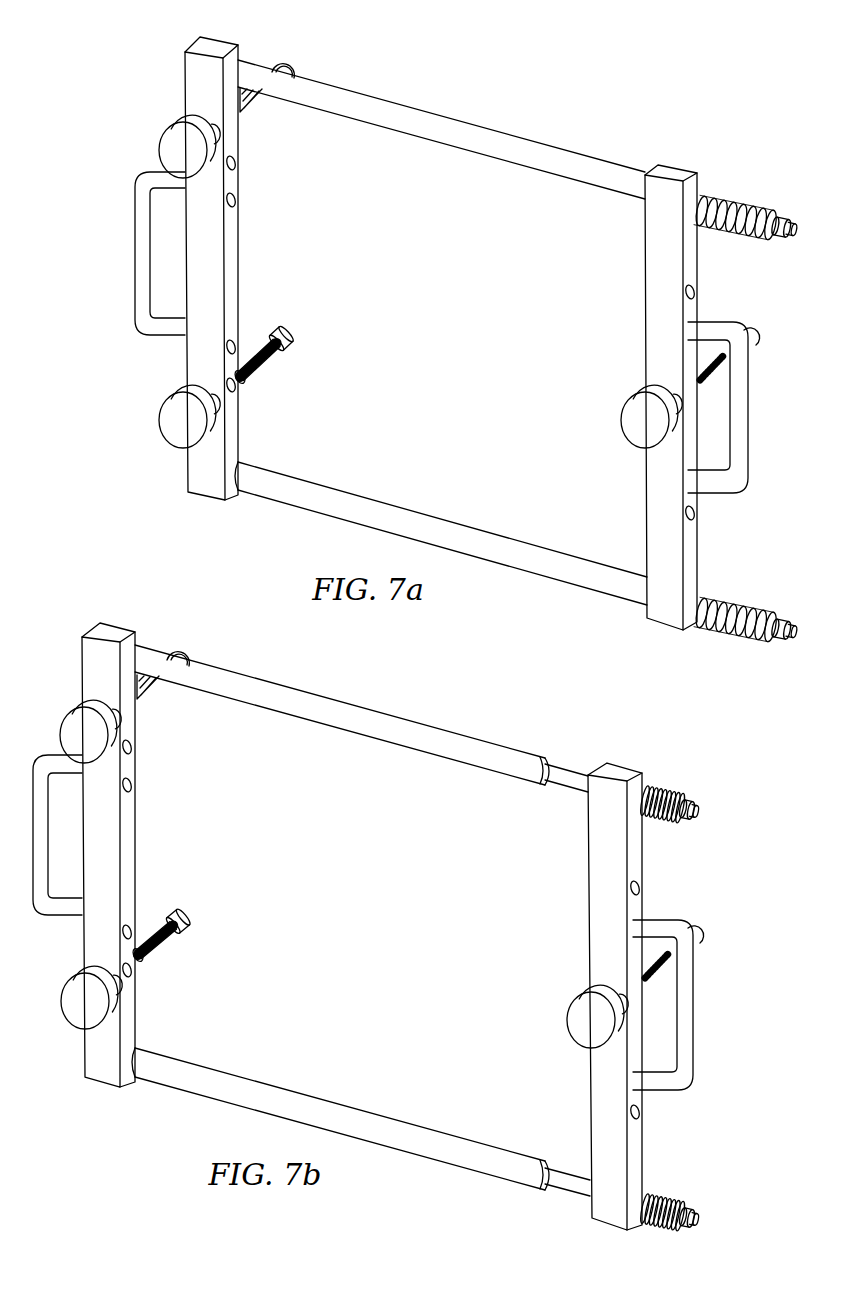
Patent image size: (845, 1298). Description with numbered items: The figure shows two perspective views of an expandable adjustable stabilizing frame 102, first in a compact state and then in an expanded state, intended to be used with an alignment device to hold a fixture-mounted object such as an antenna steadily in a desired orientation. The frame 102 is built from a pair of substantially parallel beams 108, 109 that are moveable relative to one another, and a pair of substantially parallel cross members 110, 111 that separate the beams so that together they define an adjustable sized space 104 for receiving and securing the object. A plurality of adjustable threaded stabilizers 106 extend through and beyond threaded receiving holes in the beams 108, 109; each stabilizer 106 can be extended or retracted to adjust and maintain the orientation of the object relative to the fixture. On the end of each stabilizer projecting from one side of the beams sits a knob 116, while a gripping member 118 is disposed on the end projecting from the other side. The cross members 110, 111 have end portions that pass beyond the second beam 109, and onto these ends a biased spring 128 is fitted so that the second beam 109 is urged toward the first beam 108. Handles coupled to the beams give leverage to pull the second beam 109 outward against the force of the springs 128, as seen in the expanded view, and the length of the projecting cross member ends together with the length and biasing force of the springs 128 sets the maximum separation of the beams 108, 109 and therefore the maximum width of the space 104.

In FIG. 7a, the adjustable stabilizing frame 102 is at (95, 127).
In FIG. 7b, the adjustable stabilizing frame 102 is at (732, 854).
In FIG. 7a, the adjustable sized space 104 is at (458, 323).
In FIG. 7b, the adjustable sized space 104 is at (356, 905).
In FIG. 7a, the threaded stabilizer 106 is at (276, 370).
In FIG. 7b, the threaded stabilizer 106 is at (175, 957).
In FIG. 7a, the first beam 108 is at (208, 498).
In FIG. 7b, the first beam 108 is at (103, 1080).
In FIG. 7a, the second beam 109 is at (660, 620).
In FIG. 7b, the second beam 109 is at (606, 1222).
In FIG. 7a, the cross member 110 is at (500, 138).
In FIG. 7b, the cross member 110 is at (398, 727).
In FIG. 7a, the cross member 111 is at (443, 527).
In FIG. 7b, the cross member 111 is at (338, 1115).
In FIG. 7a, the knob 116 is at (170, 148).
In FIG. 7b, the knob 116 is at (72, 735).
In FIG. 7a, the gripping member 118 is at (290, 330).
In FIG. 7b, the gripping member 118 is at (190, 915).
In FIG. 7a, the biased spring 128 is at (738, 205).
In FIG. 7b, the biased spring 128 is at (658, 797).